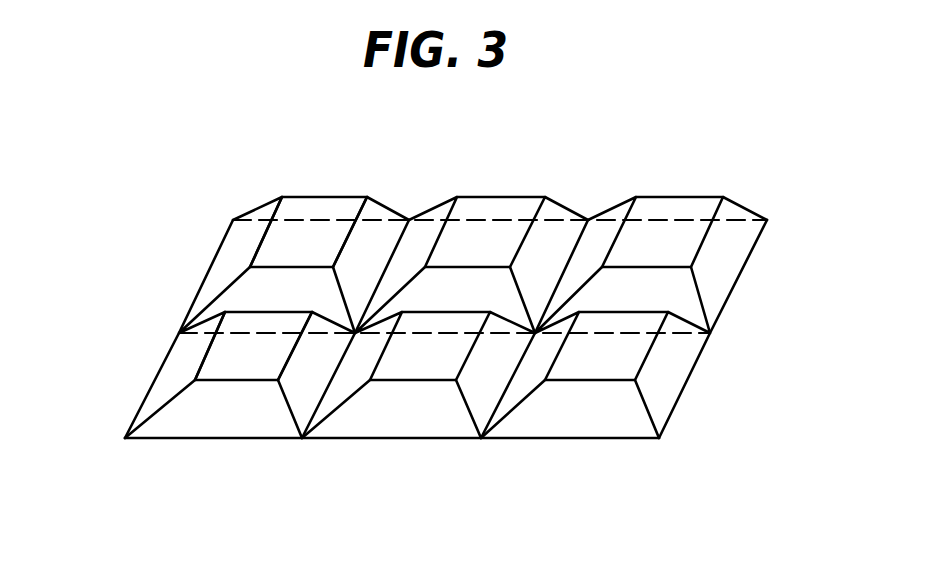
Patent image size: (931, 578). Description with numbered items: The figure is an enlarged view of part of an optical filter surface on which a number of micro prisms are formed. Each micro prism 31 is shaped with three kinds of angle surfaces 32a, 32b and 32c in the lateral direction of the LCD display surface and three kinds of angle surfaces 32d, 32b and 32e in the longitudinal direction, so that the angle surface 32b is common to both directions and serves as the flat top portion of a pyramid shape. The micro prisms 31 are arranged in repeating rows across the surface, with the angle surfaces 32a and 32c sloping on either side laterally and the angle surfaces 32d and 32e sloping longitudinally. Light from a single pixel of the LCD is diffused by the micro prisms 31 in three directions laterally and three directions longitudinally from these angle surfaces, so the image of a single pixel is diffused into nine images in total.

The micro prism 31 is at (322, 210).
The angle surface 32a is at (238, 237).
The angle surface 32b is at (290, 240).
The angle surface 32c is at (562, 217).
The angle surface 32d is at (347, 207).
The angle surface 32e is at (508, 233).